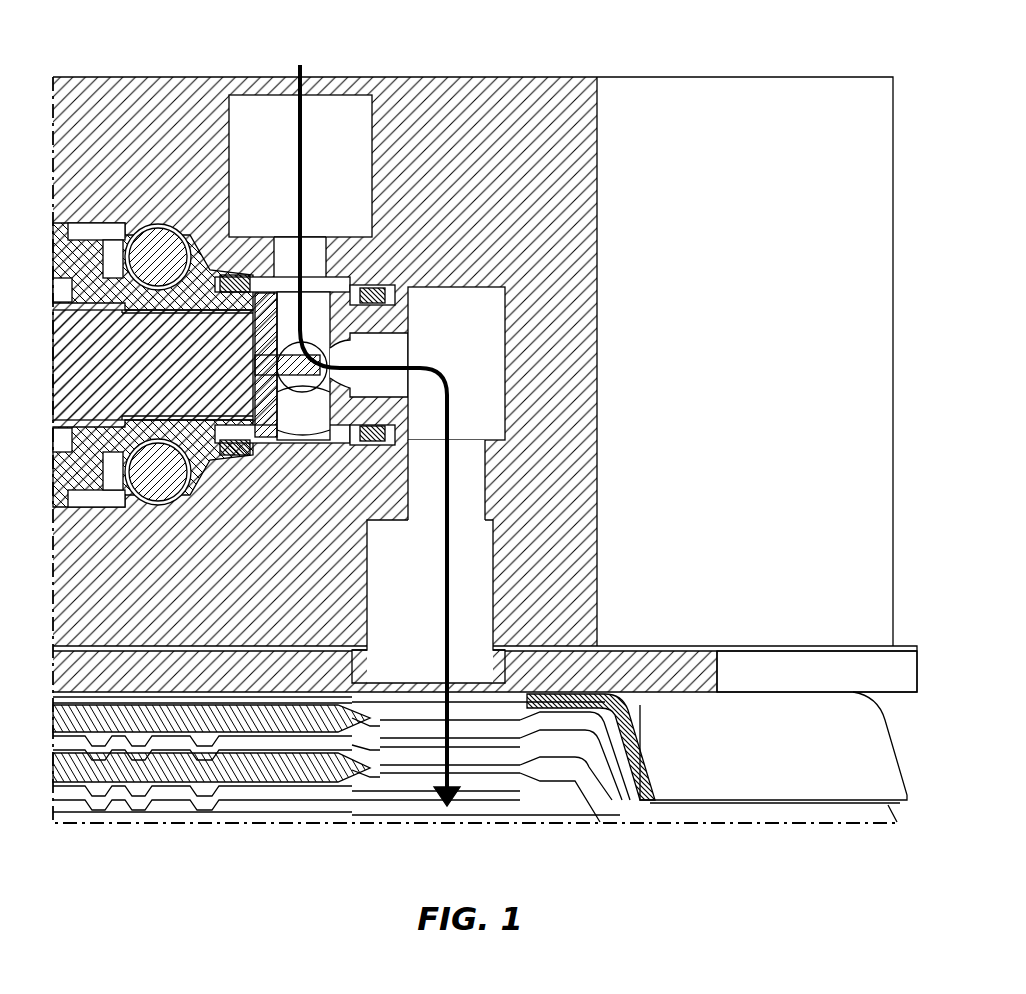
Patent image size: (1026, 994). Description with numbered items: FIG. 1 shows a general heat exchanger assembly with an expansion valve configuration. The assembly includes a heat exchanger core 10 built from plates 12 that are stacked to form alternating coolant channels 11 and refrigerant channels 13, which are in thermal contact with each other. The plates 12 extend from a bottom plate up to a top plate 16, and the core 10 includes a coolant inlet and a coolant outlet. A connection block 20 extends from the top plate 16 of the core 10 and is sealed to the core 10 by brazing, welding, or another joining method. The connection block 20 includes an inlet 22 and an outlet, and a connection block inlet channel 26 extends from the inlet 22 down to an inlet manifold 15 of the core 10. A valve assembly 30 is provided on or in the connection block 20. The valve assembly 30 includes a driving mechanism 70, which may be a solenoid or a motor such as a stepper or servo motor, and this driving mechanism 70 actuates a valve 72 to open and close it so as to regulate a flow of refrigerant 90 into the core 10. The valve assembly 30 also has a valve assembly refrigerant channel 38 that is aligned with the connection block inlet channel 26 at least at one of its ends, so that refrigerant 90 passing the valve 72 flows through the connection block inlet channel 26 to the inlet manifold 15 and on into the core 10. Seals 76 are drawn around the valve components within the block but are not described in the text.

The heat exchanger core 10 is at (640, 868).
The coolant channels 11 is at (133, 748).
The plates 12 is at (823, 782).
The refrigerant channels 13 is at (207, 772).
The inlet manifold 15 is at (490, 783).
The top plate 16 is at (900, 675).
The connection block 20 is at (680, 113).
The inlet 22 is at (331, 122).
The connection block inlet channel 26 is at (398, 643).
The valve assembly 30 is at (484, 66).
The valve assembly refrigerant channel 38 is at (316, 300).
The driving mechanism 70 is at (92, 378).
The valve 72 is at (360, 358).
The seal 76 is at (228, 268).
The refrigerant 90 is at (298, 122).